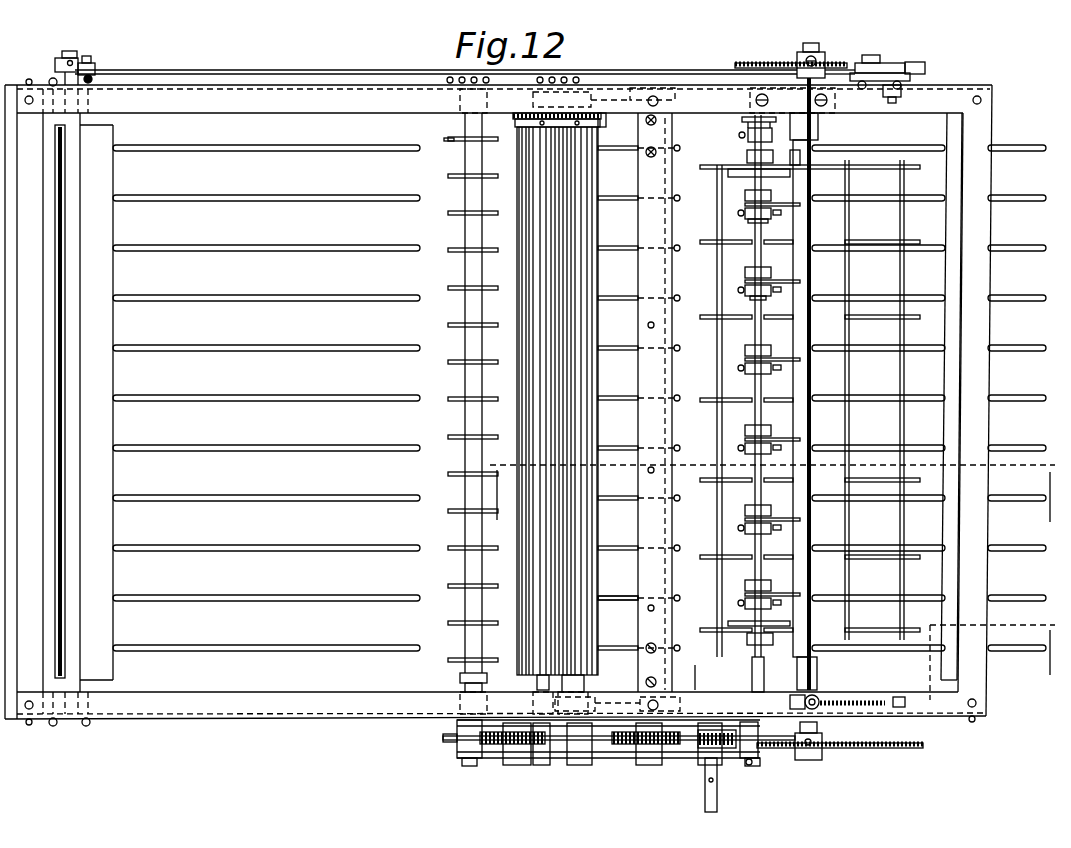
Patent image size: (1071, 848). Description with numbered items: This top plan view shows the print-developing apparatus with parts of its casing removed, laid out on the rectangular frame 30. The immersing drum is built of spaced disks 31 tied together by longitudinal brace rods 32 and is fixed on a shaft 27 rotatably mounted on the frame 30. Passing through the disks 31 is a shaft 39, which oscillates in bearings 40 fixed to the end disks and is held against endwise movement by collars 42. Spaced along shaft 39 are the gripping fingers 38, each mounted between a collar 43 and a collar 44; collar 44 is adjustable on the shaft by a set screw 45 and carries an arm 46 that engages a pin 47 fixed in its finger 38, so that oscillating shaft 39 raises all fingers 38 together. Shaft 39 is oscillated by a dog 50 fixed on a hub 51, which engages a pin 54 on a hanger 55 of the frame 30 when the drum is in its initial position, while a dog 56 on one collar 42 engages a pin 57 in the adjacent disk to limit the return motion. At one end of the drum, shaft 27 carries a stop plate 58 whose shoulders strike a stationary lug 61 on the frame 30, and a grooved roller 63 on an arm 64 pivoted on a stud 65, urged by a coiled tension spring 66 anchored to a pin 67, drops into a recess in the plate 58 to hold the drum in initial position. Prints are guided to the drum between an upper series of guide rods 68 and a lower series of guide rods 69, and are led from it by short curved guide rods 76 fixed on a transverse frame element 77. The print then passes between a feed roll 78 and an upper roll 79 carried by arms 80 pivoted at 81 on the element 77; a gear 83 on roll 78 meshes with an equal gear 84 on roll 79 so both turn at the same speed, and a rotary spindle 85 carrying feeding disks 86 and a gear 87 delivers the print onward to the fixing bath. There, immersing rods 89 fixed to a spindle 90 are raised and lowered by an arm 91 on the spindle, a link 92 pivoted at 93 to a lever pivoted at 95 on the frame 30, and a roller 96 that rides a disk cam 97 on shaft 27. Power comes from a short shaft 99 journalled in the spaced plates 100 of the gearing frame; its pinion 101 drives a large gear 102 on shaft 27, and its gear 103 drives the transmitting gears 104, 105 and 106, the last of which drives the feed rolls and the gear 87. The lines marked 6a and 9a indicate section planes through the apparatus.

The shaft 27 is at (815, 50).
The rectangular frame 30 is at (975, 90).
The disks 31 is at (880, 160).
The longitudinal brace rods 32 is at (715, 200).
The gripping fingers 38 is at (800, 205).
The shaft 39 is at (755, 330).
The bearings 40 is at (792, 173).
The collars 42 is at (747, 156).
The collar 43 is at (748, 200).
The collar 44 is at (750, 218).
The set screw 45 is at (749, 296).
The arm 46 is at (770, 218).
The pin 47 is at (773, 209).
The dog 50 is at (748, 118).
The hub 51 is at (748, 135).
The pin 54 is at (816, 125).
The hanger 55 is at (825, 111).
The dog 56 is at (795, 160).
The pin 57 is at (792, 126).
The stop plate 58 is at (856, 699).
The lug 61 is at (817, 697).
The grooved roller 63 is at (760, 695).
The arm 64 is at (762, 716).
The stud 65 is at (823, 737).
The coiled tension spring 66 is at (460, 178).
The pin 67 is at (905, 703).
The upper guide rods 68 is at (942, 200).
The lower guide rods 69 is at (1036, 195).
The curved guide rods 76 is at (620, 642).
The transverse frame element 77 is at (668, 585).
The feed roll 78 is at (522, 575).
The roll 79 is at (602, 597).
The arms 80 is at (622, 92).
The pivot 81 is at (633, 401).
The gear 83 is at (516, 118).
The gear 84 is at (604, 120).
The rotary spindle 85 is at (465, 150).
The disks 86 is at (462, 292).
The gear 87 is at (447, 742).
The immersing rods 89 is at (258, 200).
The spindle 90 is at (60, 82).
The arm 91 is at (90, 66).
The link 92 is at (352, 70).
The pivot 93 is at (922, 67).
The pivot 95 is at (888, 93).
The roller 96 is at (885, 62).
The disk cam 97 is at (770, 63).
The shaft 99 is at (718, 782).
The plates 100 is at (458, 735).
The pinion 101 is at (690, 750).
The gear 102 is at (878, 750).
The gear 103 is at (692, 752).
The drive transmitting gear 104 is at (665, 765).
The drive transmitting gear 105 is at (568, 765).
The drive transmitting gear 106 is at (538, 766).
The section line 6a is at (774, 484).
The section line 9a is at (870, 665).